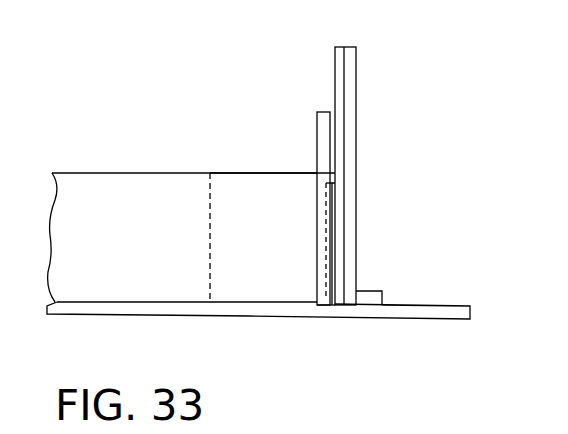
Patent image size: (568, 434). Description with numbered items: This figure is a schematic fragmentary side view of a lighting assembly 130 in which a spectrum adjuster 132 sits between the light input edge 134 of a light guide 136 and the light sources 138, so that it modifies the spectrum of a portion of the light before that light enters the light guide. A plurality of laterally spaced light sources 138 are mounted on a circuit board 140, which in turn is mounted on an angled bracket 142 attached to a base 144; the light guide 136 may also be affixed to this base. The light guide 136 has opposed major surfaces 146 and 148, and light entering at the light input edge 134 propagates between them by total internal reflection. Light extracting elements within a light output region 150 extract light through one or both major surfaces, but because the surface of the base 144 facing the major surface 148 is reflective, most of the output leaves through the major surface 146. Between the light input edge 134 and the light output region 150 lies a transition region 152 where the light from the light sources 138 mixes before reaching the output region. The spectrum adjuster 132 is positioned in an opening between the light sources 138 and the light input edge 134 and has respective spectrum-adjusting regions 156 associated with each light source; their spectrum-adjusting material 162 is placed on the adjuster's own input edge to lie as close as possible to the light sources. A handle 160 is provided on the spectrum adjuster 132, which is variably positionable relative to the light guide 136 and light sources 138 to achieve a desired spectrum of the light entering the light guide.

The lighting assembly 130 is at (219, 66).
The spectrum adjuster 132 is at (323, 228).
The light input edge 134 is at (322, 260).
The light guide 136 is at (185, 187).
The light source 138 is at (332, 218).
The circuit board 140 is at (343, 173).
The angled bracket 142 is at (352, 90).
The base 144 is at (400, 312).
The major surface 146 is at (127, 173).
The major surface 148 is at (133, 302).
The light output region 150 is at (77, 183).
The transition region 152 is at (277, 183).
The spectrum-adjusting region 156 is at (322, 268).
The handle 160 is at (330, 134).
The spectrum-adjusting material 162 is at (328, 232).